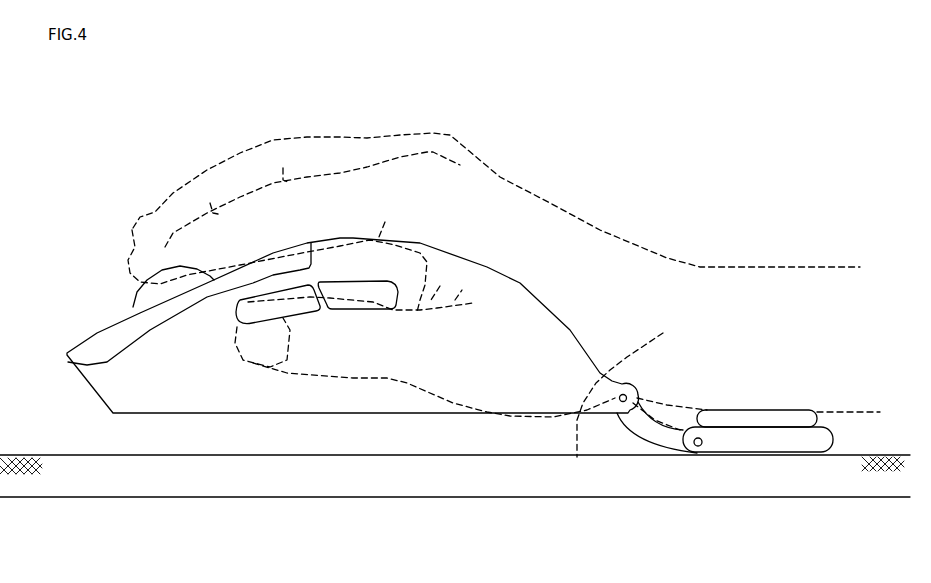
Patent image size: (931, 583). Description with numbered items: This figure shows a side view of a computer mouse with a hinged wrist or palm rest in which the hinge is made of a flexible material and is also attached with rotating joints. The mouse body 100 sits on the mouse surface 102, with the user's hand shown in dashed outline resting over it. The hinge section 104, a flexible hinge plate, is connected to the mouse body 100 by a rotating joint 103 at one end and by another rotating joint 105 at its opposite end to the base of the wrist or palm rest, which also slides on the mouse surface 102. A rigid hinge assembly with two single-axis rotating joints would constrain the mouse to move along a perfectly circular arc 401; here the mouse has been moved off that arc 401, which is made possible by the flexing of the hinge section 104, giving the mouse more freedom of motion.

The mouse body 100 is at (154, 378).
The perfectly circular arc 401 is at (663, 328).
The mouse surface 102 is at (171, 479).
The rotating joint 103 is at (615, 399).
The hinge section 104 is at (655, 441).
The second hinge joint 105 is at (701, 452).